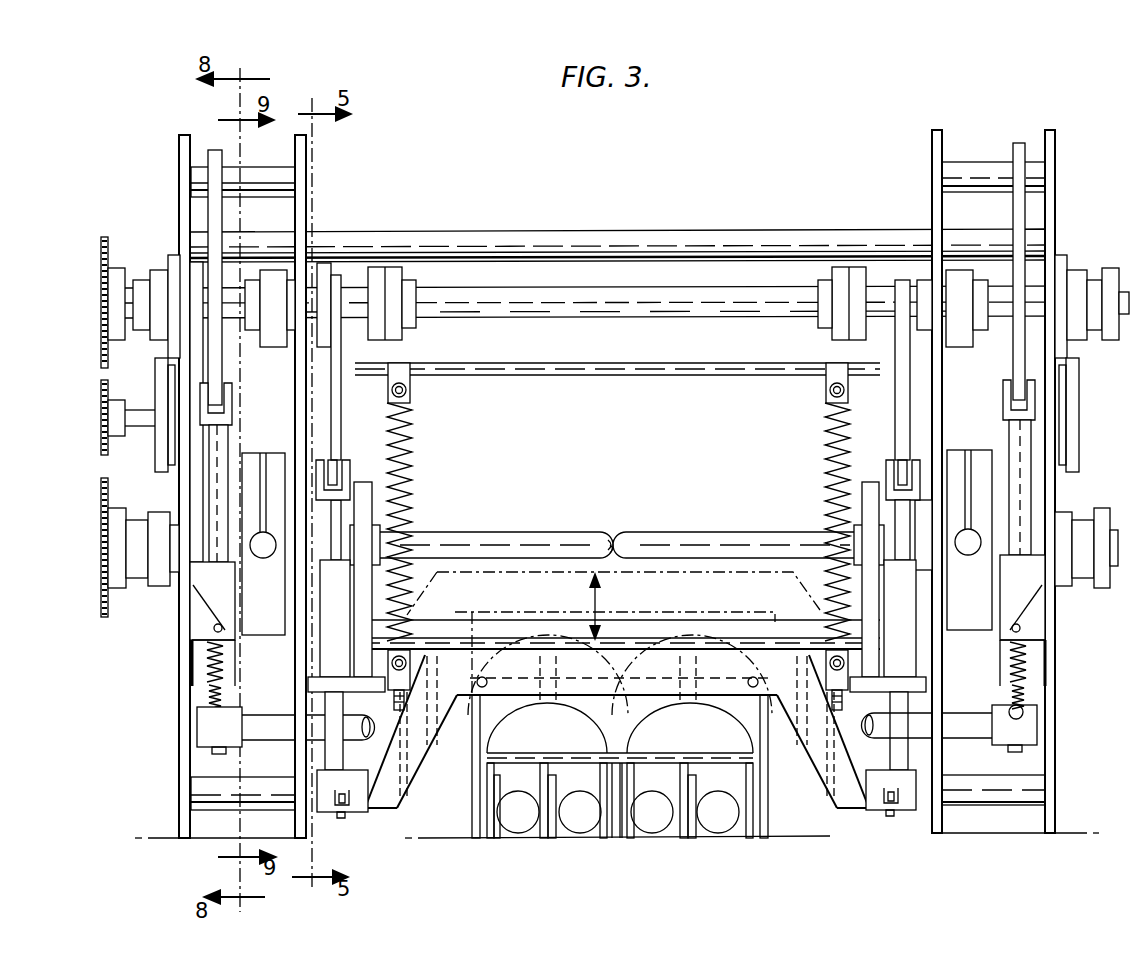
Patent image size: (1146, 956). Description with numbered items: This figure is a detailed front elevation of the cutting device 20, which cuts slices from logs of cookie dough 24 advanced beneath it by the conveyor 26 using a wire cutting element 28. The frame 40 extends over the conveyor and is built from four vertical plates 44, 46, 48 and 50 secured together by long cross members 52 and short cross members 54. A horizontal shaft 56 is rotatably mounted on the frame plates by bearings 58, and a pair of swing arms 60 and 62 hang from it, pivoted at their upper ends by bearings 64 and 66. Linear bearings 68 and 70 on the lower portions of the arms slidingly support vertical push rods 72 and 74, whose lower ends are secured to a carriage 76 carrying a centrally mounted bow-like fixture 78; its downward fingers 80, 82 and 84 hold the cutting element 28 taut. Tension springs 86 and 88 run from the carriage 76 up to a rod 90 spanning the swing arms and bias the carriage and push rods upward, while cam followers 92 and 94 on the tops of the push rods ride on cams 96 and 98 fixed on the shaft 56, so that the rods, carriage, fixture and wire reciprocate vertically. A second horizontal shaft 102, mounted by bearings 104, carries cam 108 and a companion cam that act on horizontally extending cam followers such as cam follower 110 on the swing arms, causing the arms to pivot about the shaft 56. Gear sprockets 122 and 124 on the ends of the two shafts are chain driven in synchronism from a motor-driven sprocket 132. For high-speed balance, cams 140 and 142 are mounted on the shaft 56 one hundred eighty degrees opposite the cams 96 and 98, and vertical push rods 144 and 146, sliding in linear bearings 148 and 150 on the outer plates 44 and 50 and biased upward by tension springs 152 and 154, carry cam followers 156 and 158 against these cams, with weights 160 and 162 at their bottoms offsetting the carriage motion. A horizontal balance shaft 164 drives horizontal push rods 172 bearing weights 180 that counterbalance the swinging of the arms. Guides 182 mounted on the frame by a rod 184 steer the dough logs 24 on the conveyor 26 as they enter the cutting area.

The cutting device 20 is at (1088, 158).
The dough log 24 is at (720, 836).
The conveyor 26 is at (782, 842).
The wire cutting element 28 is at (528, 838).
The frame 40 is at (168, 152).
The vertical plate 44 is at (180, 196).
The vertical plate 46 is at (305, 208).
The vertical plate 48 is at (932, 196).
The vertical plate 50 is at (1055, 224).
The long cross member 52 is at (480, 233).
The short cross member 54 is at (273, 175).
The horizontal shaft 56 is at (582, 300).
The bearing 58 is at (170, 258).
The swing arm 60 is at (405, 425).
The swing arm 62 is at (832, 428).
The bearing 64 is at (395, 272).
The bearing 66 is at (845, 272).
The linear bearing 68 is at (405, 615).
The linear bearing 70 is at (916, 666).
The vertical push rod 72 is at (340, 790).
The vertical push rod 74 is at (896, 790).
The carriage 76 is at (415, 770).
The bow-like fixture 78 is at (635, 718).
The finger 80 is at (470, 808).
The finger 82 is at (618, 840).
The finger 84 is at (763, 810).
The tension spring 86 is at (408, 476).
The tension spring 88 is at (830, 478).
The rod 90 is at (508, 372).
The cam follower 92 is at (312, 462).
The cam follower 94 is at (880, 490).
The cam 96 is at (325, 393).
The cam 98 is at (908, 404).
The horizontal shaft 102 is at (648, 534).
The bearing 104 is at (163, 578).
The cam 108 is at (855, 542).
The cam follower 110 is at (372, 542).
The gear sprocket 122 is at (100, 300).
The gear sprocket 124 is at (100, 522).
The sprocket 132 is at (100, 417).
The cam 140 is at (212, 367).
The cam 142 is at (1030, 392).
The vertical push rod 144 is at (213, 474).
The vertical push rod 146 is at (1030, 442).
The linear bearing 148 is at (195, 652).
The linear bearing 150 is at (1050, 660).
The tension spring 152 is at (205, 698).
The tension spring 154 is at (1035, 702).
The cam follower 156 is at (232, 405).
The cam follower 158 is at (1035, 410).
The weight 160 is at (205, 734).
The weight 162 is at (1048, 727).
The horizontal balance shaft 164 is at (505, 532).
The horizontal push rod 172 is at (262, 558).
The weight 180 is at (256, 632).
The guide 182 is at (680, 838).
The rod 184 is at (528, 753).